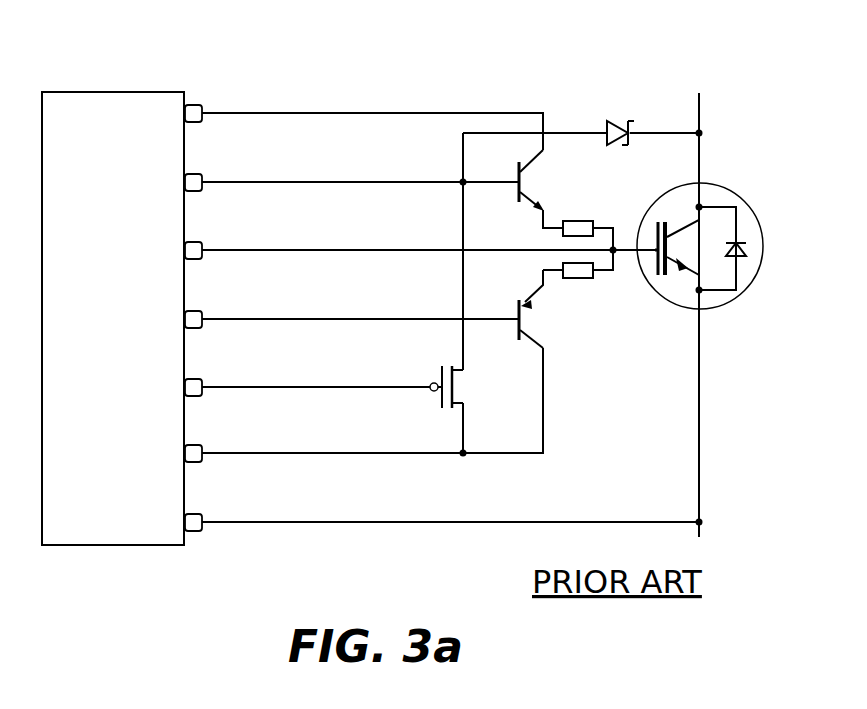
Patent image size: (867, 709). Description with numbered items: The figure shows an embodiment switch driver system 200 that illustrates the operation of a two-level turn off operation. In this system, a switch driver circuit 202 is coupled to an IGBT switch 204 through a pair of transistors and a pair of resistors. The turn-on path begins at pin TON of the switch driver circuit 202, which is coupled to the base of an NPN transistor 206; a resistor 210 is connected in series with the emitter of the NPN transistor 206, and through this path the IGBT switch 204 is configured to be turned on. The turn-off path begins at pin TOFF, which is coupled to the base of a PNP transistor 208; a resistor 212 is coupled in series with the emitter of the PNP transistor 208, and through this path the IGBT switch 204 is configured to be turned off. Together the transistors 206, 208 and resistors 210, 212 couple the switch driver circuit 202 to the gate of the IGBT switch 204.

The switch driver system 200 is at (148, 42).
The switch driver circuit 202 is at (90, 92).
The IGBT switch 204 is at (713, 186).
The NPN transistor 206 is at (531, 163).
The PNP transistor 208 is at (515, 305).
The resistor 210 is at (590, 222).
The resistor 212 is at (590, 280).